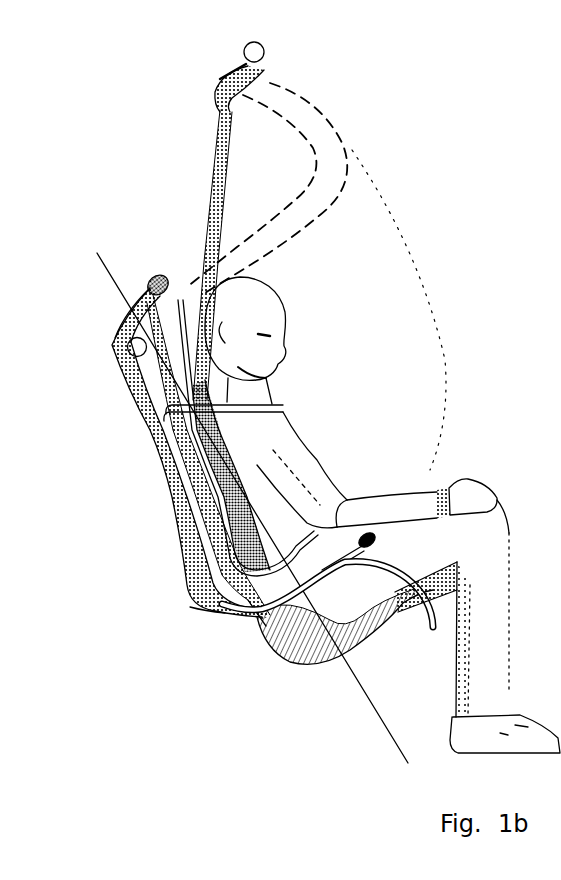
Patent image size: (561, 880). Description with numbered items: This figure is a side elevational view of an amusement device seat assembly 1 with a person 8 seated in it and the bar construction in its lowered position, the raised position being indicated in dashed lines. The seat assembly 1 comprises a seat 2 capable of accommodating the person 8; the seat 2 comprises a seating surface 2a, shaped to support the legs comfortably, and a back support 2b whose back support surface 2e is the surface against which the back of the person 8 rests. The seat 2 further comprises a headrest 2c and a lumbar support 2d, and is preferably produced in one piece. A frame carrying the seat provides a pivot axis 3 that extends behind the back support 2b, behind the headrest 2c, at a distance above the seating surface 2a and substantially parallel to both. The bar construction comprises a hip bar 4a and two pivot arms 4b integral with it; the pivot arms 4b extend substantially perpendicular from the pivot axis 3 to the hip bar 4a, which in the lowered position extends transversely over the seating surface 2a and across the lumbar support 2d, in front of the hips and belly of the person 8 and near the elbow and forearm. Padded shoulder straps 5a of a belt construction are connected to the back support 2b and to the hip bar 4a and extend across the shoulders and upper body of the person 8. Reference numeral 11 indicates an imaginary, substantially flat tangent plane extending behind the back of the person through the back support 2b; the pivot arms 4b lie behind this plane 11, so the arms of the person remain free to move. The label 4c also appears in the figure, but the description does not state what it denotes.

The amusement device seat assembly 1 is at (122, 217).
The seat 2 is at (165, 598).
The seating surface 2a is at (370, 637).
The back support 2b is at (203, 548).
The headrest 2c is at (162, 285).
The lumbar support 2d is at (271, 438).
The back support surface 2e is at (227, 455).
The pivot axis 3 is at (137, 347).
The hip bar 4a is at (243, 58).
The pivot arms 4b is at (277, 230).
The belt section in deployed position 4c is at (285, 97).
The shoulder straps 5a is at (283, 417).
The person 8 is at (382, 515).
The imaginary plane 11 is at (383, 725).